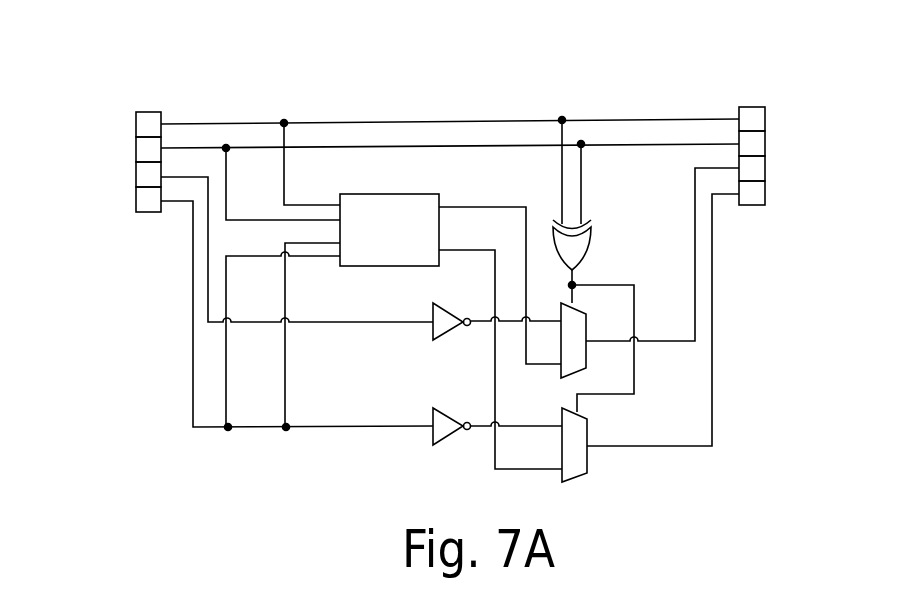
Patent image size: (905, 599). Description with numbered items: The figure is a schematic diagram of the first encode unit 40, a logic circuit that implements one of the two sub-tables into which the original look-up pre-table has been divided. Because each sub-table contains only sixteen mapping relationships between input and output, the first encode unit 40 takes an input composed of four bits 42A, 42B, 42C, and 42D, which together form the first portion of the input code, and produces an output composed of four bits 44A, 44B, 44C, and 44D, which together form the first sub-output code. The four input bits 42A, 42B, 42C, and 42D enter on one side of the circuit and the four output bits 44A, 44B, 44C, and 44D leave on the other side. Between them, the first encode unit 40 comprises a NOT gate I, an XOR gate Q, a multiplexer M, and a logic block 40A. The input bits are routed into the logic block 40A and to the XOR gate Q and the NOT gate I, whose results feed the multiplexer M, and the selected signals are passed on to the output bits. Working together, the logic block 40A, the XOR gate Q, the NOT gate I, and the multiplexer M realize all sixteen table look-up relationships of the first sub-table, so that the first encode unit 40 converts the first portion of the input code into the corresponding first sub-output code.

The first encode unit 40 is at (458, 73).
The logic block 40A is at (421, 244).
The input bit 42A is at (136, 128).
The input bit 42B is at (136, 156).
The input bit 42C is at (136, 176).
The input bit 42D is at (136, 200).
The output bit 44A is at (765, 118).
The output bit 44B is at (765, 147).
The output bit 44C is at (765, 167).
The output bit 44D is at (765, 196).
The XOR gate Q is at (590, 243).
The NOT gate I is at (443, 440).
The multiplexer M is at (574, 481).